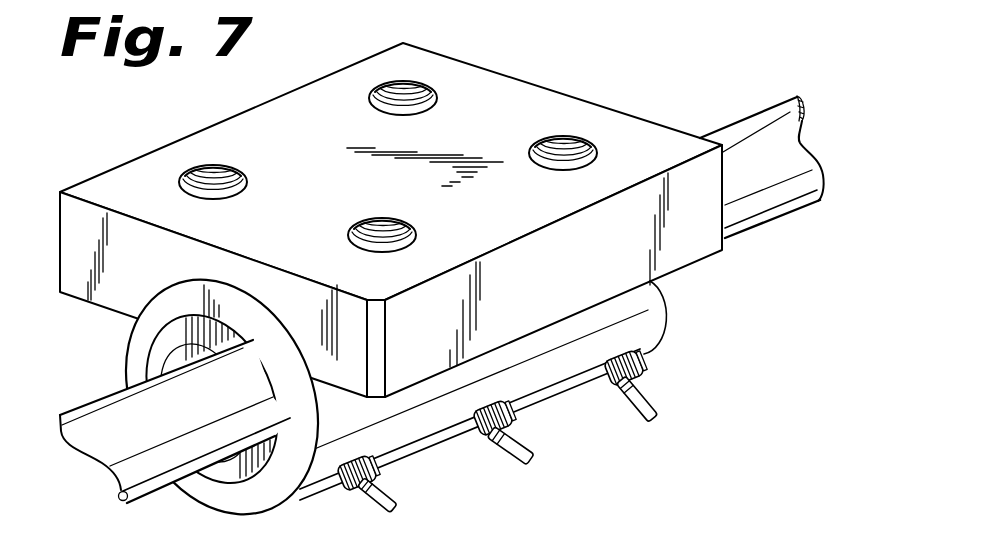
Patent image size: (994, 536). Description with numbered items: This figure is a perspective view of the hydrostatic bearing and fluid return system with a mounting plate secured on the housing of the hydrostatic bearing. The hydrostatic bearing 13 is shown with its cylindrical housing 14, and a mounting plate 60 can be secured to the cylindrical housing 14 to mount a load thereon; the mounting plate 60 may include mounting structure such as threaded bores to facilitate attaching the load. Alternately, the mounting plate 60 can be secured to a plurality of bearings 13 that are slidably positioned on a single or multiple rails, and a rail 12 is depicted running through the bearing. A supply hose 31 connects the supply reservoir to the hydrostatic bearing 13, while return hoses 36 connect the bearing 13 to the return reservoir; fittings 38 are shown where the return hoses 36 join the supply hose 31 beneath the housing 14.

The guide rail 12 is at (747, 131).
The hydrostatic bearing 13 is at (133, 362).
The cylindrical housing 14 is at (647, 308).
The supply hose 31 is at (497, 462).
The return hoses 36 is at (393, 507).
The fitting 38 is at (377, 472).
The mounting plate 60 is at (580, 102).